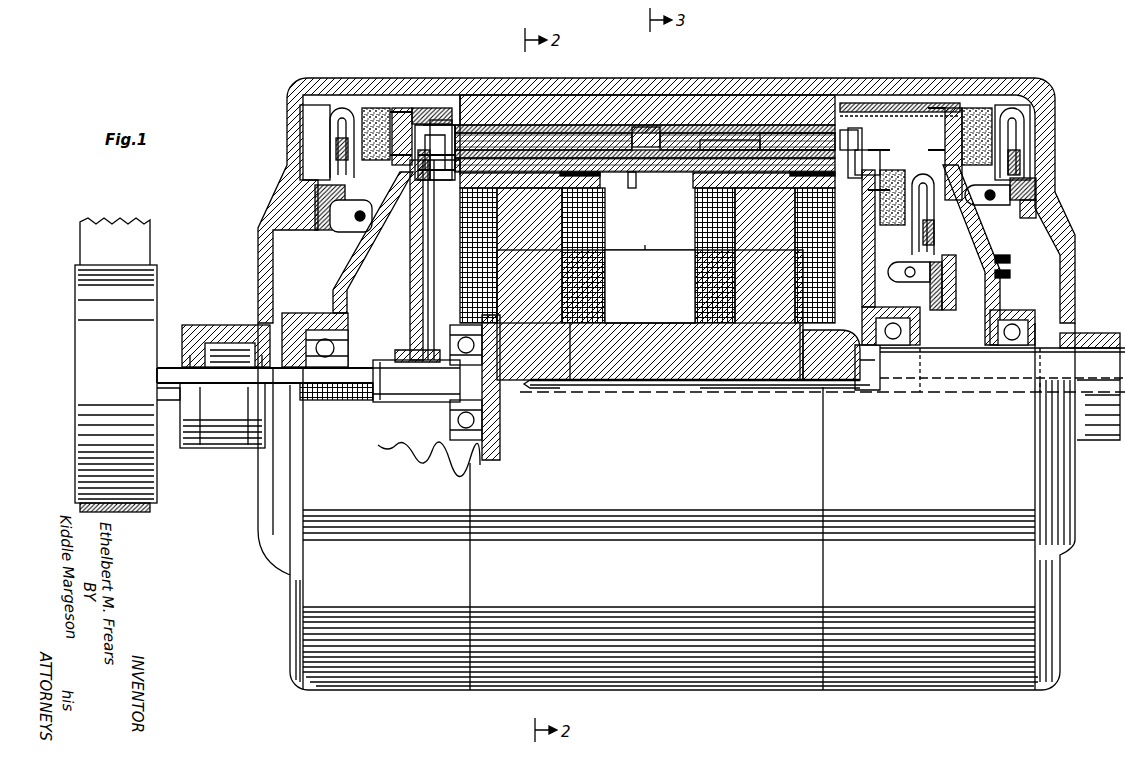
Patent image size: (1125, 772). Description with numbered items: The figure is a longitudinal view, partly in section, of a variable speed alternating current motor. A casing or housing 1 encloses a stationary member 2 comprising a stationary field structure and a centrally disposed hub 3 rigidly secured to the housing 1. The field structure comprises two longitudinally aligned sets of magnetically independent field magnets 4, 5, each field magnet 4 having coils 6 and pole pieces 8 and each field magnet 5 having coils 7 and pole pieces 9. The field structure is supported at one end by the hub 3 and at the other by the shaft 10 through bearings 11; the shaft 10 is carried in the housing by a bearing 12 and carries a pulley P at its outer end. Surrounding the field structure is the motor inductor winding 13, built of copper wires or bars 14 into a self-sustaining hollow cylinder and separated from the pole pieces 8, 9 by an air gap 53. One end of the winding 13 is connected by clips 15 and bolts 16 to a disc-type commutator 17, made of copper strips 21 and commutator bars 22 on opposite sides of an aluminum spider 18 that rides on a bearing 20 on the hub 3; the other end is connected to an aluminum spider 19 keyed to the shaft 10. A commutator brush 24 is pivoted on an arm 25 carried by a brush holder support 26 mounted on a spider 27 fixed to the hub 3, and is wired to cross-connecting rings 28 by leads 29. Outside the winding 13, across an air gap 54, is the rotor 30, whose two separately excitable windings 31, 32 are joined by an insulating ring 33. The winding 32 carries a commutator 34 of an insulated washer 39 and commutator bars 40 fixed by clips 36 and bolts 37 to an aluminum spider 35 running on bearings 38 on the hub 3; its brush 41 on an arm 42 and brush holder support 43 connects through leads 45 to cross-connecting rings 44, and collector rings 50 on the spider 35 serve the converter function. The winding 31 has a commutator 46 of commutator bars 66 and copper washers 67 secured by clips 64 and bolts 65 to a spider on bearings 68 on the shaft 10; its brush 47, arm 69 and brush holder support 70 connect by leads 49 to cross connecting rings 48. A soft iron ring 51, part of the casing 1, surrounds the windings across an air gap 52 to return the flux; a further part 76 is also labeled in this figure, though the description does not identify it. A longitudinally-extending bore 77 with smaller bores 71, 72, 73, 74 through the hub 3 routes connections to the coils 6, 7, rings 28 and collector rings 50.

The casing or housing 1 is at (1062, 262).
The stationary member 2 is at (640, 375).
The hub 3 is at (925, 372).
The field magnet 4 is at (545, 385).
The field magnet 5 is at (760, 345).
The coils 6 is at (605, 312).
The coils 7 is at (700, 292).
The pole pieces 8 is at (585, 182).
The pole pieces 9 is at (695, 192).
The shaft 10 is at (416, 381).
The bearings 11 is at (452, 340).
The bearing 12 is at (222, 345).
The motor inductor winding 13 is at (640, 147).
The copper wires or bars 14 is at (700, 160).
The clips 15 is at (438, 185).
The bolts 16 is at (410, 190).
The commutator 17 is at (865, 160).
The aluminum spider 18 is at (870, 300).
The aluminum spider 19 is at (412, 324).
The bearing 20 is at (863, 375).
The copper strips 21 is at (866, 228).
The commutator bars 22 is at (862, 255).
The commutator brush 24 is at (895, 226).
The arm 25 is at (909, 281).
The brush holder support 26 is at (939, 285).
The spider 27 is at (970, 295).
The cross-connecting rings 28 is at (934, 232).
The leads 29 is at (918, 180).
The rotor 30 is at (642, 145).
The winding 31 is at (500, 125).
The winding 32 is at (775, 133).
The insulating ring 33 is at (630, 172).
The commutator 34 is at (946, 108).
The aluminum spider 35 is at (1022, 218).
The clips 36 is at (842, 100).
The bolts 37 is at (895, 103).
The bearings 38 is at (1012, 355).
The insulated washer 39 is at (945, 135).
The commutator bars 40 is at (975, 108).
The brush 41 is at (1012, 108).
The arm 42 is at (987, 203).
The brush holder support 43 is at (1036, 190).
The cross-connecting rings 44 is at (1020, 170).
The leads 45 is at (1030, 125).
The commutator 46 is at (402, 110).
The brush 47 is at (348, 110).
The cross connecting rings 48 is at (336, 155).
The leads 49 is at (330, 130).
The collector rings 50 is at (1010, 274).
The ring 51 is at (570, 152).
The air gap 52 is at (520, 133).
The air gap 53 is at (580, 172).
The air gap 54 is at (735, 140).
The clips 64 is at (440, 108).
The bolts 65 is at (368, 202).
The commutator bars 66 is at (375, 108).
The copper washers 67 is at (440, 110).
The bearings 68 is at (345, 296).
The arm 69 is at (345, 230).
The brush holder support 70 is at (370, 232).
The bore 71 is at (560, 387).
The bore 72 is at (790, 389).
The bore 73 is at (965, 388).
The bore 74 is at (1040, 388).
The joint 76 is at (475, 95).
The longitudinally-extending bore 77 is at (660, 387).
The pulley P is at (78, 428).